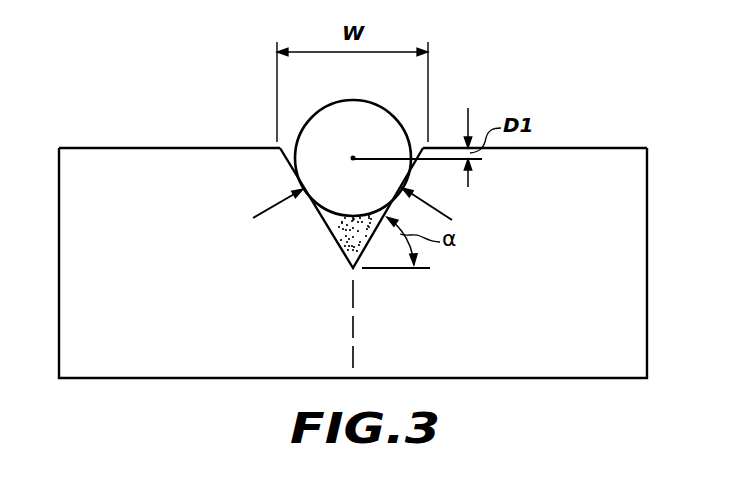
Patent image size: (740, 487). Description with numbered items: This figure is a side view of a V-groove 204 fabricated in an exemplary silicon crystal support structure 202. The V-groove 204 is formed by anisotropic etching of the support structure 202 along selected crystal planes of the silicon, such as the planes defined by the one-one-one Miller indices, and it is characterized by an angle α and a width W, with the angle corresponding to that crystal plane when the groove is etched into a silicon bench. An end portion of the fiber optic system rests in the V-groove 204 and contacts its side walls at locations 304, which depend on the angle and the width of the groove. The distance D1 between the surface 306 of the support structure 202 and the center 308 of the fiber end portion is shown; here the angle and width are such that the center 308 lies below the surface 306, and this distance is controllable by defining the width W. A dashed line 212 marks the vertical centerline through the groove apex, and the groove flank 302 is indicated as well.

The silicon crystal support structure 202 is at (622, 351).
The V-groove 204 is at (216, 112).
The centerline axis 212 is at (355, 302).
The V-groove 302 is at (283, 155).
The locations 304 is at (273, 207).
The surface 306 is at (582, 148).
The center 308 is at (348, 144).